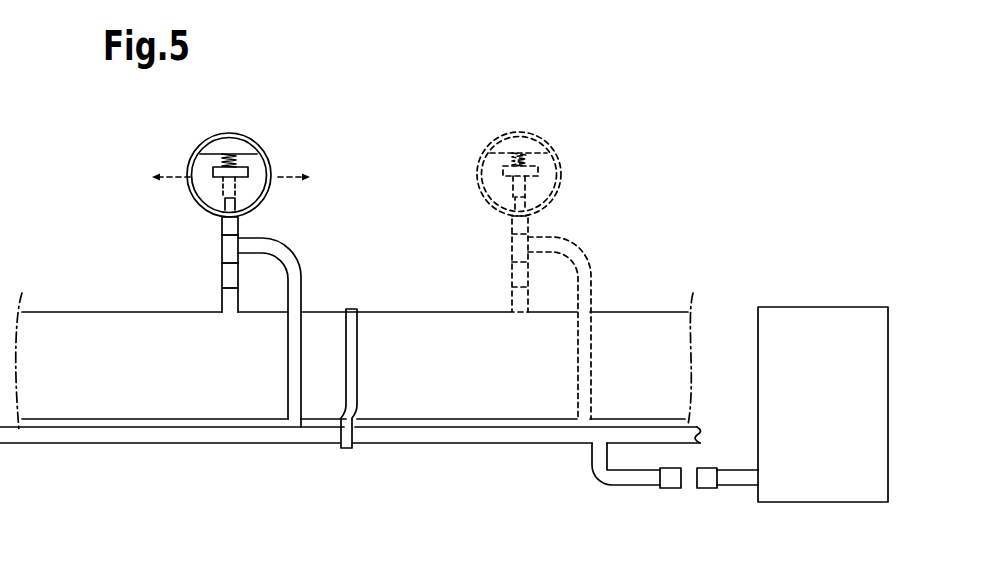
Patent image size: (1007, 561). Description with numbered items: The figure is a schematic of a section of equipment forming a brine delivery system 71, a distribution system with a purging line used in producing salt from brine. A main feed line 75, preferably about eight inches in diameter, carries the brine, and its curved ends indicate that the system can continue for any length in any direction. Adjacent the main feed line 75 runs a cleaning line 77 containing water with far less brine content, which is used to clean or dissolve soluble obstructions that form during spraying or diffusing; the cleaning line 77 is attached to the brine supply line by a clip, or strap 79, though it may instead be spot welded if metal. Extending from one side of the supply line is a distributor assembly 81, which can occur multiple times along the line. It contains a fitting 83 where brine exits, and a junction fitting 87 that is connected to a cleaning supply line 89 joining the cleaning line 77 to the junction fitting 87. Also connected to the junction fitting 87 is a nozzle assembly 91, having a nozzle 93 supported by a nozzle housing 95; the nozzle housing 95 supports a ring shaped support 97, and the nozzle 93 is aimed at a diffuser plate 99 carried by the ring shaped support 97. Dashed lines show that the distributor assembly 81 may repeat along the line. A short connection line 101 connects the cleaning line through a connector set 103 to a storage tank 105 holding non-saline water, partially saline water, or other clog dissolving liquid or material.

The brine delivery system 71 is at (96, 282).
The main feed line 75 is at (432, 312).
The cleaning line 77 is at (107, 445).
The clip, or strap 79 is at (357, 357).
The distributor assembly 81 is at (376, 247).
The fitting 83 is at (222, 303).
The junction fitting 87 is at (220, 249).
The cleaning supply line 89 is at (287, 246).
The nozzle assembly 91 is at (254, 139).
The nozzle 93 is at (247, 209).
The nozzle housing 95 is at (222, 226).
The ring shaped support 97 is at (270, 163).
The diffuser plate 99 is at (213, 172).
The short connection line 101 is at (637, 481).
The connector set 103 is at (725, 496).
The storage tank 105 is at (795, 307).